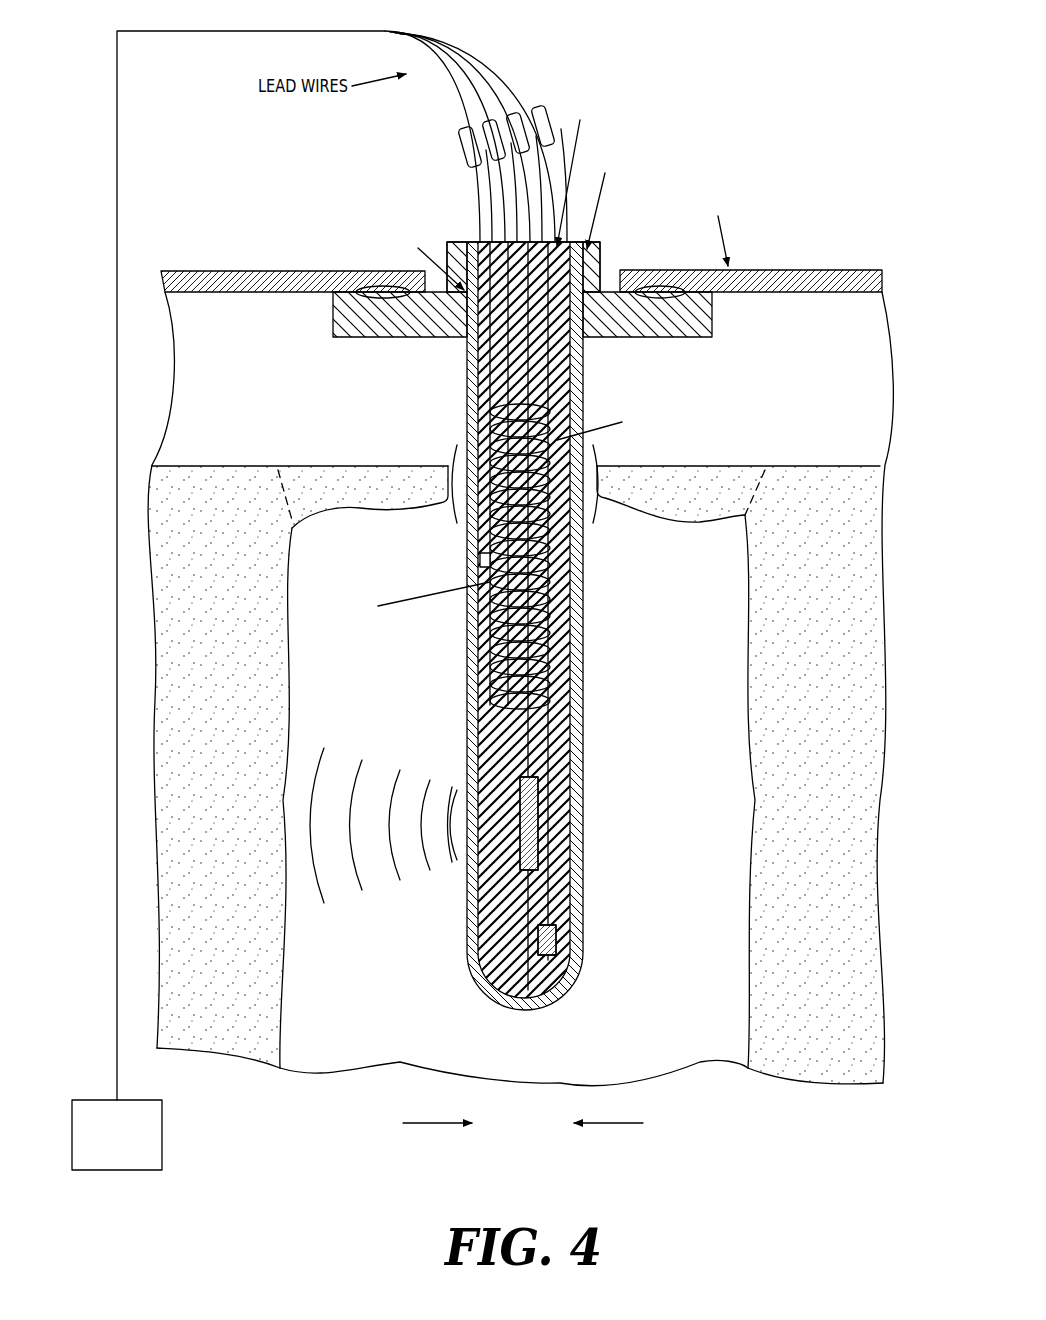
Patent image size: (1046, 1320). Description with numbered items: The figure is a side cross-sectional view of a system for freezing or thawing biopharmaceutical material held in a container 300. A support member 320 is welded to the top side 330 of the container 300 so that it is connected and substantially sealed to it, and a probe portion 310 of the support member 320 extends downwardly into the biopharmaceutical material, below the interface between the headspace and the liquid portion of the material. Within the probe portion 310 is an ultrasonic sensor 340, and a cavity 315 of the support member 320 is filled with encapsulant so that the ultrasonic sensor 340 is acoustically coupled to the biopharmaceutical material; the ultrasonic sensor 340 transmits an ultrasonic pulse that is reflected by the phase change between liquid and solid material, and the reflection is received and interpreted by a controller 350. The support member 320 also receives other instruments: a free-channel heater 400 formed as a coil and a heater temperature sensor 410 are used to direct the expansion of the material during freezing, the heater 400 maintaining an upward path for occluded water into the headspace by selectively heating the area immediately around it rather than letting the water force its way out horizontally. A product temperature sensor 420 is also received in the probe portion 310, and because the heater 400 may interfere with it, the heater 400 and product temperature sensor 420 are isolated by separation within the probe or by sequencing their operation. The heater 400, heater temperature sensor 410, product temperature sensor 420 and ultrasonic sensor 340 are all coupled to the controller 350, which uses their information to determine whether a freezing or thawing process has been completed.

The container 300 is at (857, 270).
The probe portion 310 is at (472, 942).
The cavity 315 is at (558, 722).
The support member 320 is at (713, 313).
The top side 330 is at (777, 270).
The ultrasonic sensor 340 is at (530, 857).
The controller 350 is at (140, 1150).
The free-channel heater 400 is at (556, 422).
The heater temperature sensor 410 is at (482, 560).
The product temperature sensor 420 is at (548, 948).